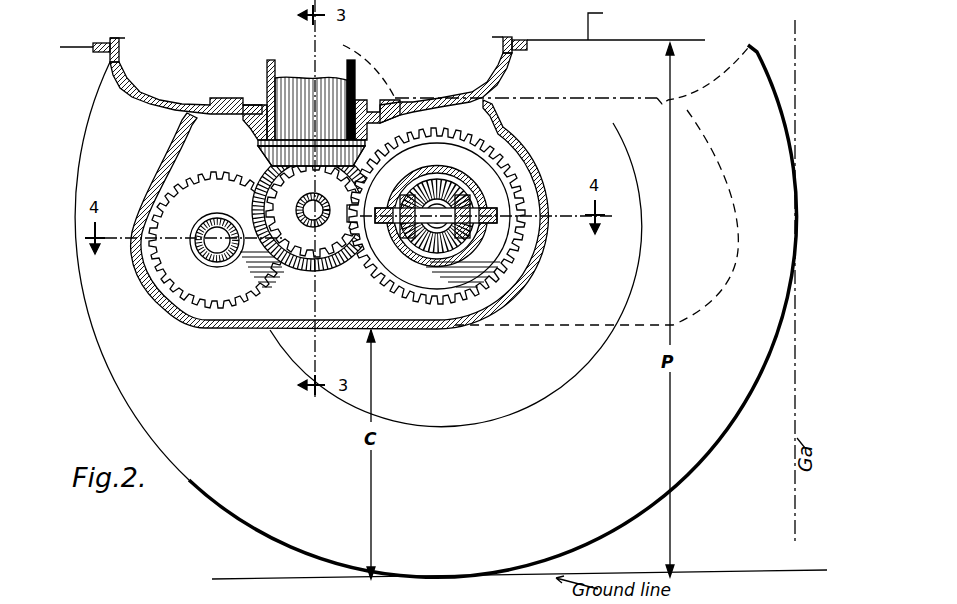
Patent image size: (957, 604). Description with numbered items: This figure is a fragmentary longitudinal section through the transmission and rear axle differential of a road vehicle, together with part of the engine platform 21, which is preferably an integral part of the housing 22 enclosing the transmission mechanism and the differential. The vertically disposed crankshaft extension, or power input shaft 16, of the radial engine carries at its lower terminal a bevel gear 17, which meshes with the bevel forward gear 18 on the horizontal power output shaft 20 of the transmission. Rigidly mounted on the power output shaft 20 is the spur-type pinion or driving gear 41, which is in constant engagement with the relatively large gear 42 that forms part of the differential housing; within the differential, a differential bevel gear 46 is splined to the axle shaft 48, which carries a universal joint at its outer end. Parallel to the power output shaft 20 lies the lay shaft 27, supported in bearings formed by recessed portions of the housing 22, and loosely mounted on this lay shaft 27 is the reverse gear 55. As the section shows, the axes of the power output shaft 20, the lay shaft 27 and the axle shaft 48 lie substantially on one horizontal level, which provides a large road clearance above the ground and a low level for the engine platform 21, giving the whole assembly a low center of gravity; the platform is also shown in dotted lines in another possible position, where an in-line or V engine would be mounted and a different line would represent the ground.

The power input shaft 16 is at (285, 97).
The bevel gear 17 is at (262, 150).
The bevel forward gear 18 is at (308, 272).
The power output shaft 20 is at (290, 270).
The engine platform 21 is at (125, 75).
The housing 22 is at (150, 182).
The lay shaft 27 is at (200, 258).
The driving gear 41 is at (343, 228).
The large gear 42 is at (474, 142).
The differential bevel gear 46 is at (452, 187).
The axle shaft 48 is at (475, 246).
The reverse gear 55 is at (207, 293).